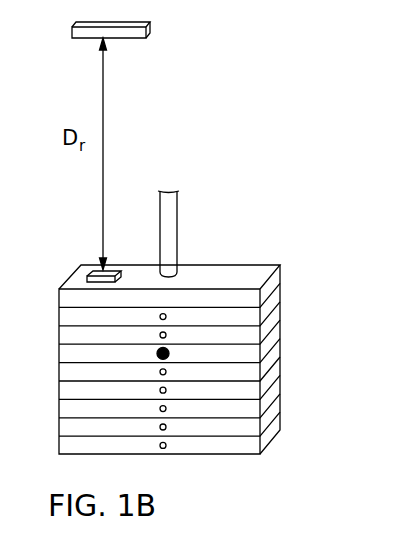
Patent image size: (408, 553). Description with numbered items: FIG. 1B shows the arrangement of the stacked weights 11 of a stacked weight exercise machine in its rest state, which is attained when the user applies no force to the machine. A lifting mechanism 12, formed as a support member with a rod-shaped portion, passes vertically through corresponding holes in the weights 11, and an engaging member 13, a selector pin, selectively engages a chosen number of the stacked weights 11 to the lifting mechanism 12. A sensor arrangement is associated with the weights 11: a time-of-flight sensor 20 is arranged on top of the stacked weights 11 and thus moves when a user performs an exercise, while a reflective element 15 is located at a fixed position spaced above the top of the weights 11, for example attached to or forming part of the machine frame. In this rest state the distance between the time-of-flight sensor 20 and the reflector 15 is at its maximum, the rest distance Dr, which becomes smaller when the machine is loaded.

The weights 11 is at (287, 290).
The lifting mechanism 12 is at (178, 233).
The engaging member 13 is at (168, 356).
The reflective element 15 is at (148, 27).
The time-of-flight sensor 20 is at (98, 267).